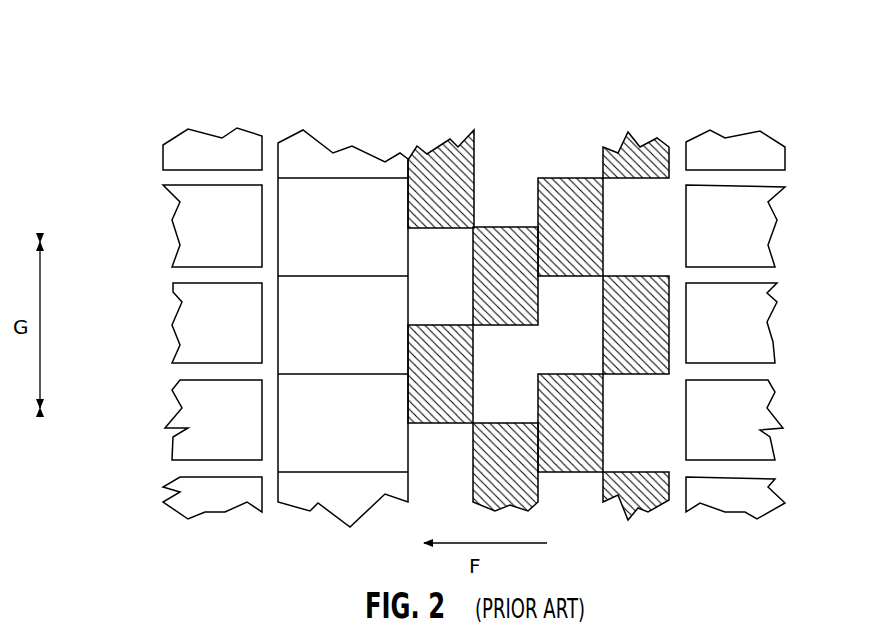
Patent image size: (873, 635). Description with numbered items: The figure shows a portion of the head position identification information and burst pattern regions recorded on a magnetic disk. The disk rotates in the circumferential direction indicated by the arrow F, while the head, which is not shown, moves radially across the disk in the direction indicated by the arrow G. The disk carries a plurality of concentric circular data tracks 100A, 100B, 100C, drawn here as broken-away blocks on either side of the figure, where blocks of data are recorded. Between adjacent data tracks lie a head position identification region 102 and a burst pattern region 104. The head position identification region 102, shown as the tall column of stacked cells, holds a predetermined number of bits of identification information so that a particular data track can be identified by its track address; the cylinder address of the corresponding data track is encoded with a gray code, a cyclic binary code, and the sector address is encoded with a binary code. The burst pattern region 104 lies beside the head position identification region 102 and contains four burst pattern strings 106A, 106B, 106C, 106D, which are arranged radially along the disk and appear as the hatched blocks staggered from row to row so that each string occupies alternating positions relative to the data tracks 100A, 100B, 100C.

The data track 100A is at (177, 244).
The data track 100B is at (178, 342).
The data track 100C is at (178, 432).
The head position identification region 102 is at (405, 57).
The burst pattern region 104 is at (538, 266).
The burst pattern string 106A is at (470, 105).
The burst pattern string 106B is at (537, 105).
The burst pattern string 106C is at (603, 105).
The burst pattern string 106D is at (636, 293).